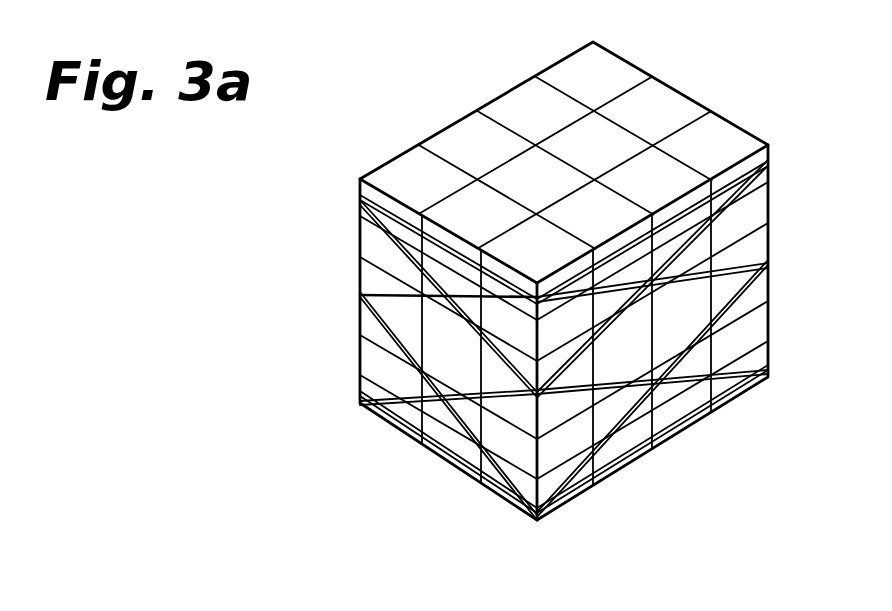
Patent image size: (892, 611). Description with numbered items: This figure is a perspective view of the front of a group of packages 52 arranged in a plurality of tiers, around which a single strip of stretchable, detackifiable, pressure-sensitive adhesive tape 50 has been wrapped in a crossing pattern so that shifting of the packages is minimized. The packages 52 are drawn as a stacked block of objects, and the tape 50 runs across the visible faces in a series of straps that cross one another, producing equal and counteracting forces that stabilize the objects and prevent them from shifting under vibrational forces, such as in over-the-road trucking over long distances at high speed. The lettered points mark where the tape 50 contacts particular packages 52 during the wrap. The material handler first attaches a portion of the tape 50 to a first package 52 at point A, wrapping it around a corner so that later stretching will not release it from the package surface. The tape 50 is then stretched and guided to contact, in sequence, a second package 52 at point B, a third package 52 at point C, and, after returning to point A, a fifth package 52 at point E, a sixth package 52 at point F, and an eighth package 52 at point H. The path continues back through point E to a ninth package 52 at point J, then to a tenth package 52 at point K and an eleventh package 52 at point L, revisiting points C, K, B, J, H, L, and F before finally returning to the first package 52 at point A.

The tape 50 is at (401, 432).
The packages 52 is at (507, 110).
The point A is at (360, 403).
The point B is at (462, 465).
The point C is at (770, 166).
The point E is at (520, 517).
The point F is at (770, 265).
The point H is at (360, 295).
The point J is at (770, 372).
The point K is at (360, 203).
The point L is at (540, 300).